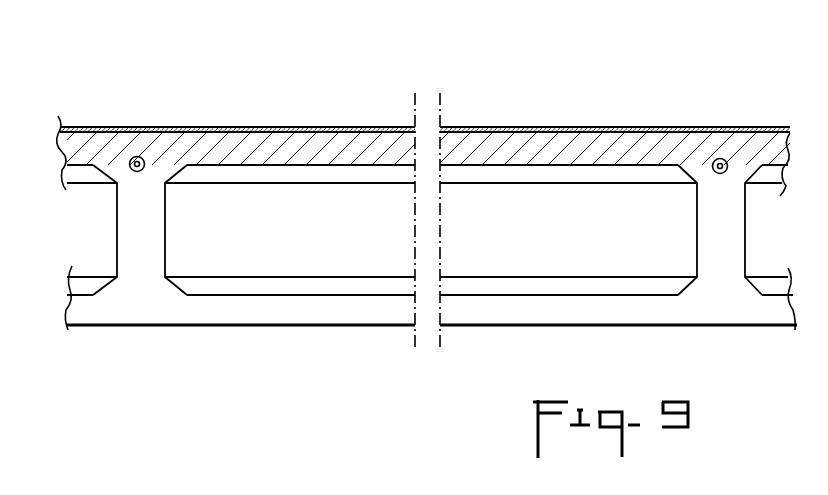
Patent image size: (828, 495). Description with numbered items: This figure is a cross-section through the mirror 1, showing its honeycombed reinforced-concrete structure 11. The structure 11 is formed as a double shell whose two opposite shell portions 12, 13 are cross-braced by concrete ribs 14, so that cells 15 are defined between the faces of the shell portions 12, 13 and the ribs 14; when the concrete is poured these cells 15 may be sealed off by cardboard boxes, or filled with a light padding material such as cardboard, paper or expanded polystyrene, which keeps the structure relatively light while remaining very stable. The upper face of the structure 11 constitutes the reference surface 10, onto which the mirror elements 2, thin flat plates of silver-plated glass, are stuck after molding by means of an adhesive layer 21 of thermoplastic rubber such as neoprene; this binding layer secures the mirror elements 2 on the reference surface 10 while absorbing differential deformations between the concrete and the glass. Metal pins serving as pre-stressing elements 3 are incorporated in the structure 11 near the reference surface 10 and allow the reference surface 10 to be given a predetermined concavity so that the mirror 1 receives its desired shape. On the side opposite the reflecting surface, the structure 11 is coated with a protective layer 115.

The mirror 1 is at (94, 110).
The mirror elements 2 is at (186, 125).
The adhesive layer 21 is at (214, 133).
The pre-stressing elements 3 is at (138, 156).
The reference surface 10 is at (794, 128).
The structure 11 is at (235, 320).
The protective layer 115 is at (357, 327).
The shell portion 12 is at (287, 310).
The shell portion 13 is at (303, 152).
The ribs 14 is at (147, 212).
The cells 15 is at (165, 248).